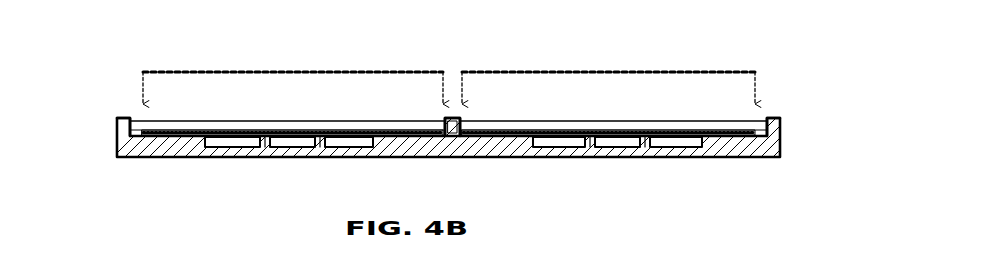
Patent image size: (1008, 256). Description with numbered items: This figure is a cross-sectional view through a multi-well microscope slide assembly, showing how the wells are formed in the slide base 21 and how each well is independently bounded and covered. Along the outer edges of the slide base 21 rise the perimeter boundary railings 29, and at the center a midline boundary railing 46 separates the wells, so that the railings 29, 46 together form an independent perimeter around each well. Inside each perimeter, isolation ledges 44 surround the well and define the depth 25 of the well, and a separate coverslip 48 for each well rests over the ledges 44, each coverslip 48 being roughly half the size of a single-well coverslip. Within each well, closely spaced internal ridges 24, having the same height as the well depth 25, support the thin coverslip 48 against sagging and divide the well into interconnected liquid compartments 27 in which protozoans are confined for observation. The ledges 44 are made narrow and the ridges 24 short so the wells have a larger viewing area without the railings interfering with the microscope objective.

The slide base 21 is at (165, 158).
The perimeter boundary railings 29 is at (128, 118).
The midline boundary railings 46 is at (452, 125).
The isolation ledges 44 is at (387, 133).
The coverslips 48 is at (238, 72).
The depth of the well 25 is at (213, 140).
The liquid compartments 27 is at (278, 140).
The ridges 24 is at (327, 142).